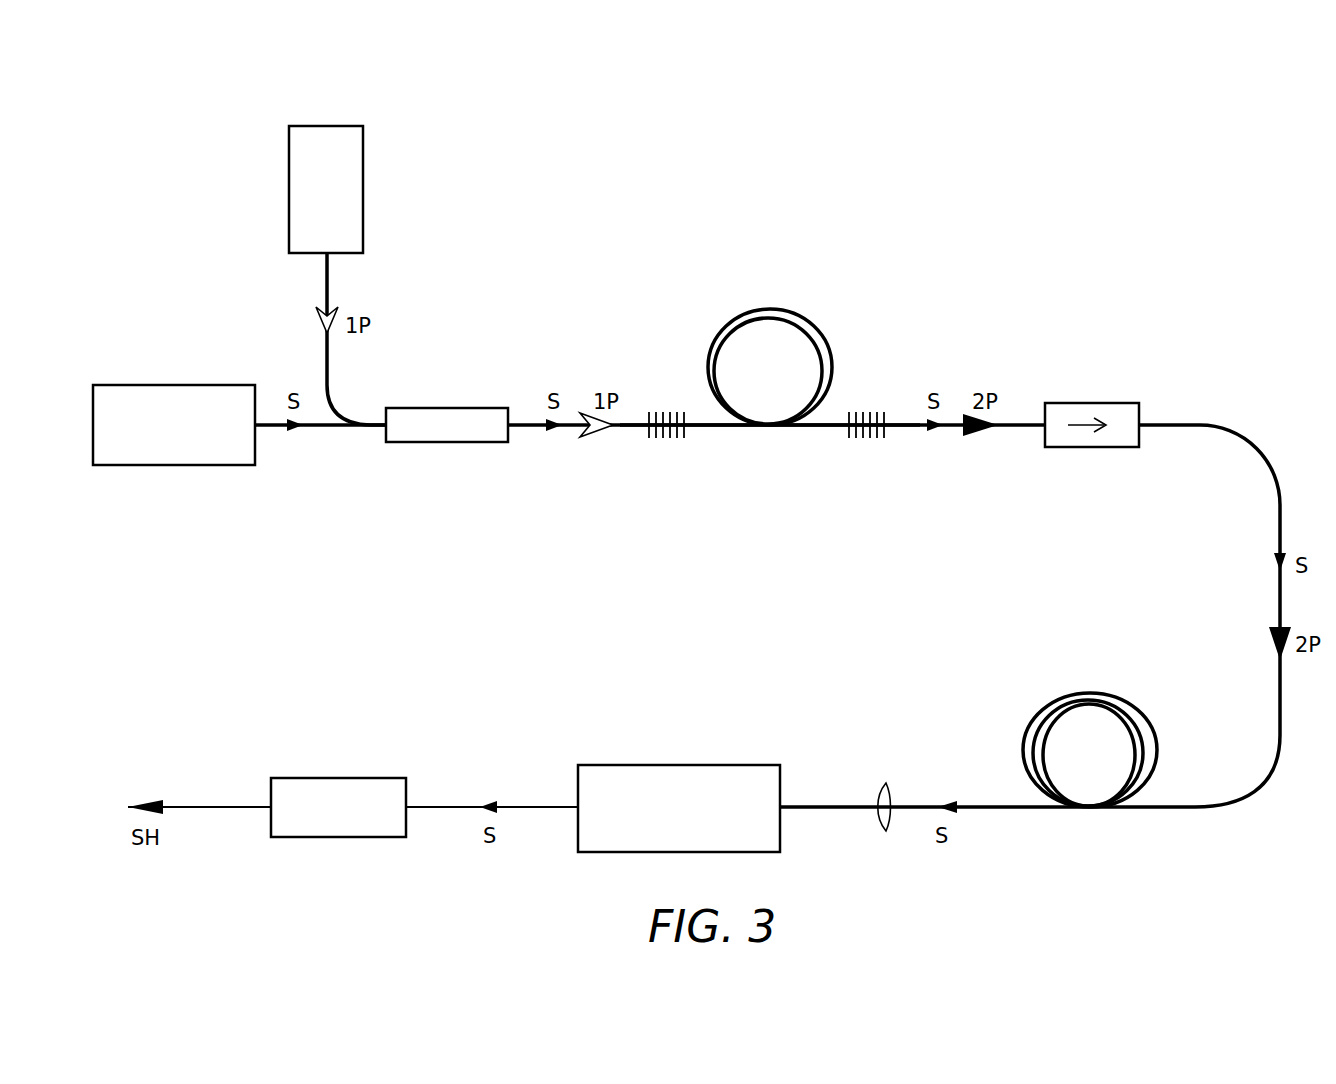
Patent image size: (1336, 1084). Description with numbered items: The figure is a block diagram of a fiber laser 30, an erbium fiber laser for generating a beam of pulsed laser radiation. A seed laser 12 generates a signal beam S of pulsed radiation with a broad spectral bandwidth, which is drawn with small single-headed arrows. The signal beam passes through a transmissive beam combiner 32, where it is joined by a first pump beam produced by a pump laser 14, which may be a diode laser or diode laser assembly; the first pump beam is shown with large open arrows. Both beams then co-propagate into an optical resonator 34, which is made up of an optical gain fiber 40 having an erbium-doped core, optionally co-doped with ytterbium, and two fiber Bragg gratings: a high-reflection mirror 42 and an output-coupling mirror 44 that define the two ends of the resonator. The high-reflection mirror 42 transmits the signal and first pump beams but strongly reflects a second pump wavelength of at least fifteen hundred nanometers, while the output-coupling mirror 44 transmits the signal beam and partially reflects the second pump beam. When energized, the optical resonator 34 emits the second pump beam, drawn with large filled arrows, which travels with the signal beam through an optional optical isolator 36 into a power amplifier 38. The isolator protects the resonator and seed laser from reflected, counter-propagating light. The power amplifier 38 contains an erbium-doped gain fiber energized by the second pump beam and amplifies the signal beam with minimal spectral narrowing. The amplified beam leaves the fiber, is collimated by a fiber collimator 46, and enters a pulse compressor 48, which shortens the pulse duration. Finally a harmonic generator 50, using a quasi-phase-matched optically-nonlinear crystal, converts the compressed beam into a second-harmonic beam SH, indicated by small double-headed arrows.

The fiber laser 30 is at (212, 142).
The seed laser 12 is at (147, 386).
The pump laser 14 is at (363, 160).
The transmissive beam combiner 32 is at (432, 410).
The optical resonator 34 is at (706, 278).
The optical isolator 36 is at (1108, 405).
The power amplifier 38 is at (1073, 695).
The optical gain fiber 40 is at (790, 312).
The high-reflection mirror 42 is at (665, 442).
The output-coupling mirror 44 is at (865, 442).
The fiber collimator 46 is at (886, 783).
The pulse compressor 48 is at (625, 770).
The harmonic generator 50 is at (310, 780).